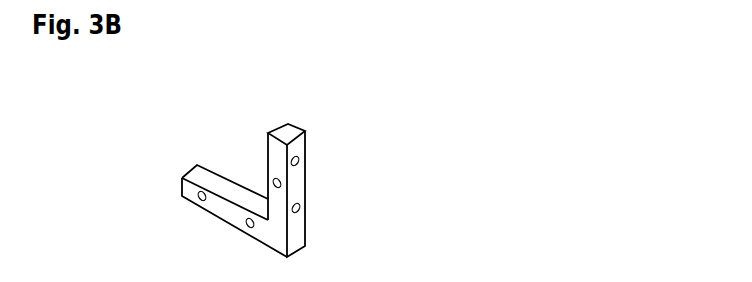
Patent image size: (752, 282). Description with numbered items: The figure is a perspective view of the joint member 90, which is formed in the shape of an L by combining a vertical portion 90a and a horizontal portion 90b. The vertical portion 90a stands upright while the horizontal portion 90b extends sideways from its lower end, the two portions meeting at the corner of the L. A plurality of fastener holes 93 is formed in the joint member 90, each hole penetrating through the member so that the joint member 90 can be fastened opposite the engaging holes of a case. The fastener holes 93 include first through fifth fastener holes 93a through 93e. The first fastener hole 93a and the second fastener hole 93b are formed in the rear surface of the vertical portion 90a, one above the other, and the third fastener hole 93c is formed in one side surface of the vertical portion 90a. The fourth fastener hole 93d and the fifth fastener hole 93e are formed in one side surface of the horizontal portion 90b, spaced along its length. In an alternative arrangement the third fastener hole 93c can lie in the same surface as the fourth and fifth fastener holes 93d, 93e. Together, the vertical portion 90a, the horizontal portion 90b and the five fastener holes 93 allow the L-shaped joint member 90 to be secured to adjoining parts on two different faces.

The joint member 90 is at (155, 89).
The vertical portion 90a is at (268, 158).
The horizontal portion 90b is at (196, 170).
The fastener holes 93 is at (393, 280).
The first fastener hole 93a is at (299, 158).
The second fastener hole 93b is at (300, 207).
The third fastener hole 93c is at (281, 181).
The fourth fastener hole 93d is at (254, 226).
The fifth fastener hole 93e is at (204, 200).